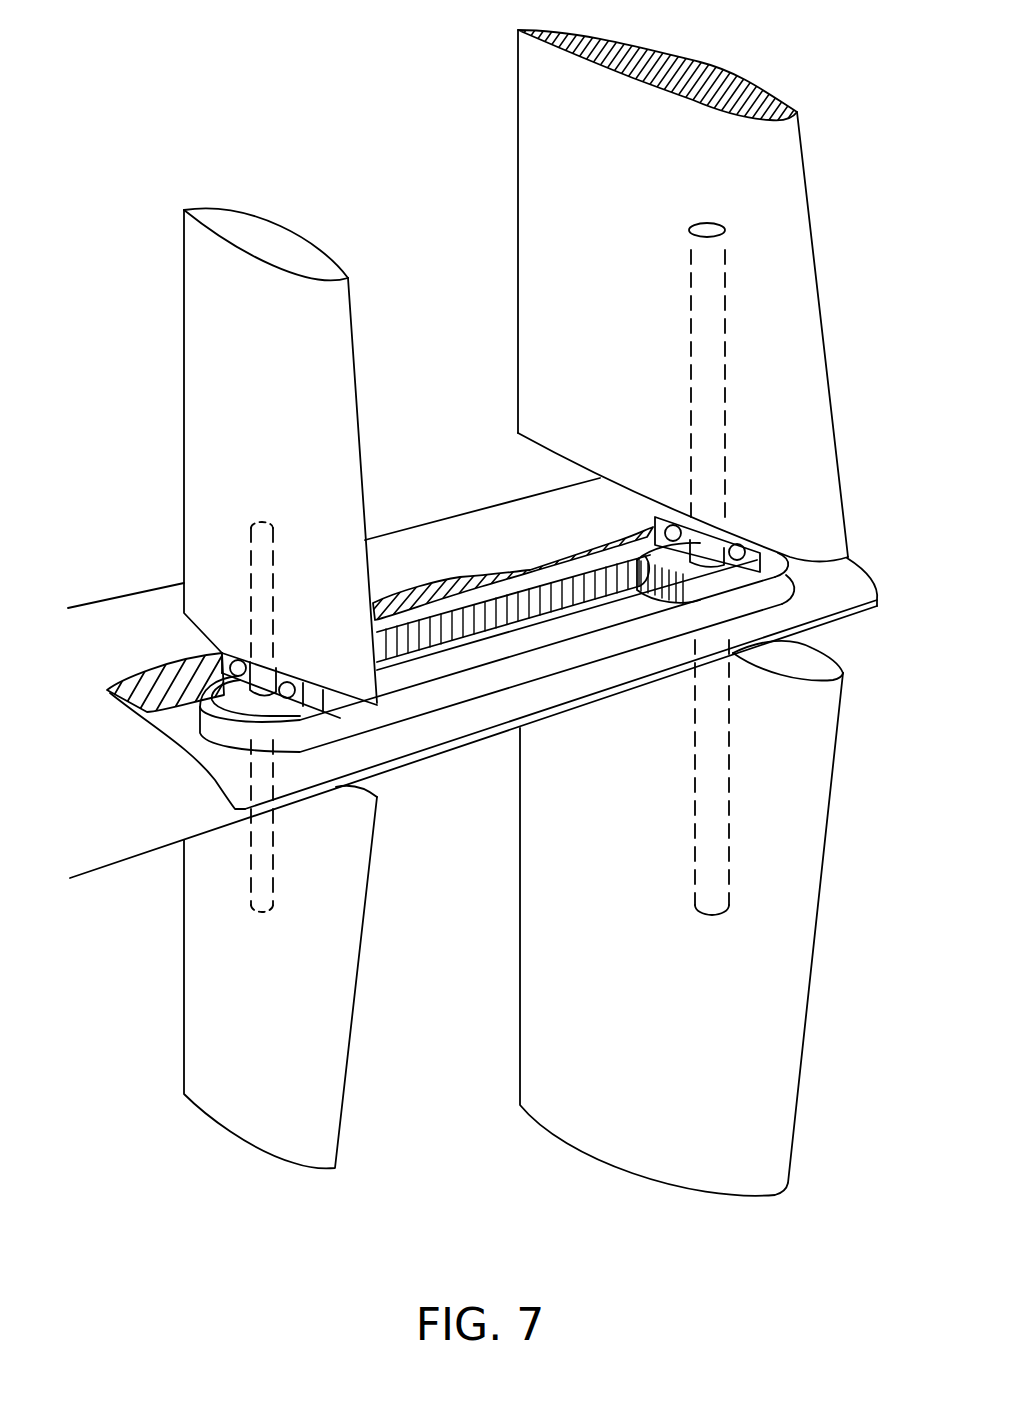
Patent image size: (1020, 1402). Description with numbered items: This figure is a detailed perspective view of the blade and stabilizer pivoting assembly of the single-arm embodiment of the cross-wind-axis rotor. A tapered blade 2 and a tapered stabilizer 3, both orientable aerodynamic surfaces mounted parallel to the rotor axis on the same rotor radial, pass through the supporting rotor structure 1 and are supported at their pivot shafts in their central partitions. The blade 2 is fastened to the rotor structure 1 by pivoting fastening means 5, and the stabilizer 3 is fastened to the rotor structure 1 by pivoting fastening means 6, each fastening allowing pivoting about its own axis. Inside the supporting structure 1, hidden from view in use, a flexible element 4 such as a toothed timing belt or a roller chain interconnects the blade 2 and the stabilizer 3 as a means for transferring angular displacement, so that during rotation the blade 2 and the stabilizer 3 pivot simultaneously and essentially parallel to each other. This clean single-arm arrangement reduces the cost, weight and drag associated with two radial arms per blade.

The rotor structure 1 is at (165, 582).
The blade 2 is at (518, 252).
The stabilizer 3 is at (184, 210).
The flexible element 4 is at (530, 677).
The pivoting fastening means 5 is at (656, 522).
The pivoting fastening means 6 is at (222, 655).